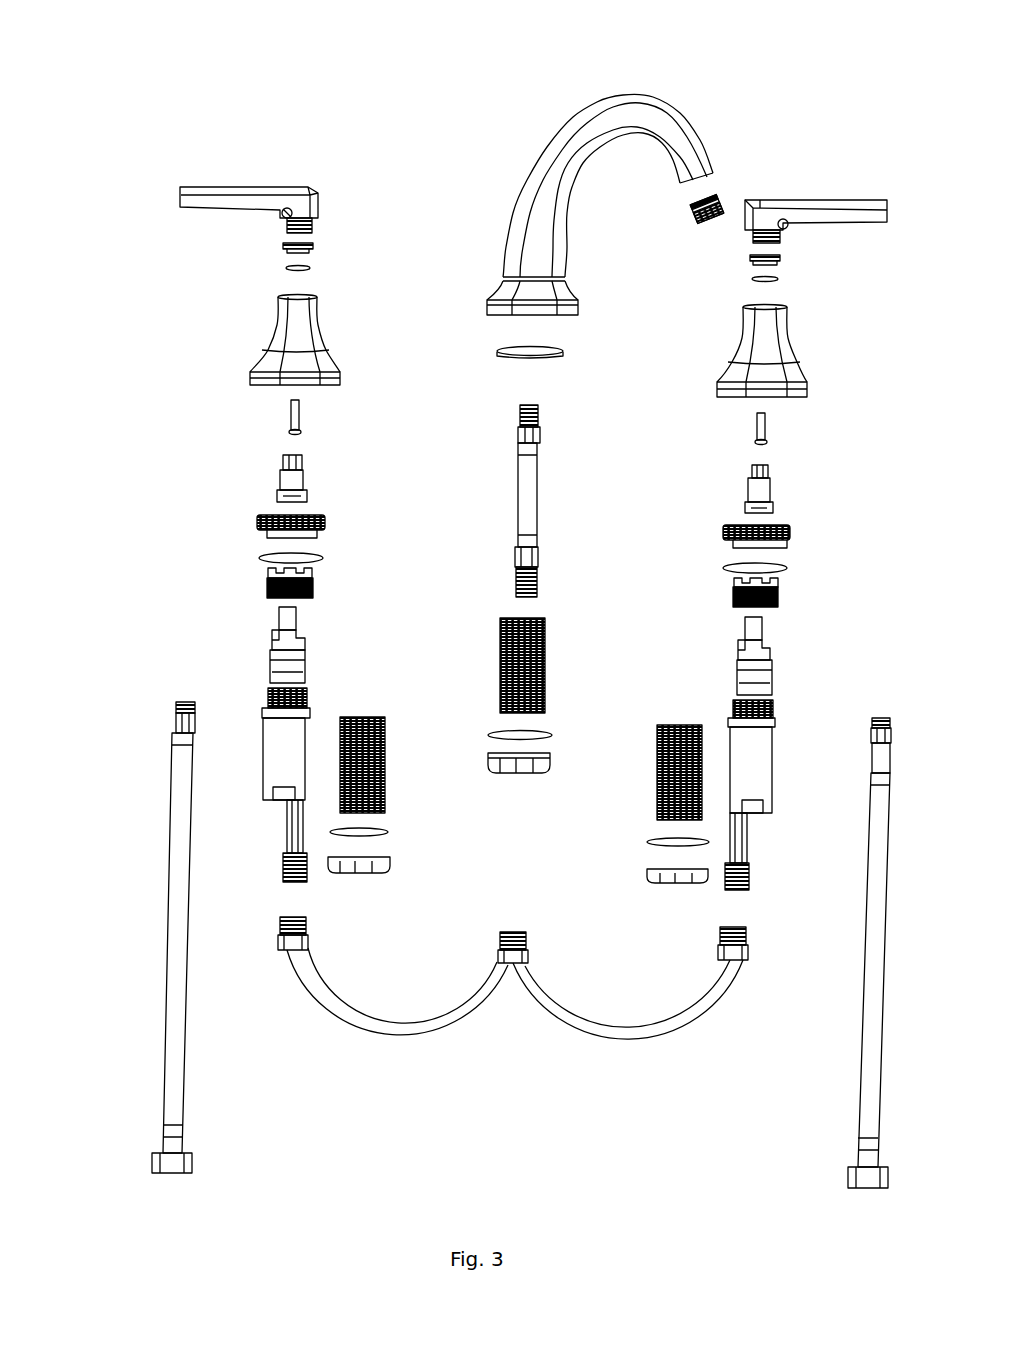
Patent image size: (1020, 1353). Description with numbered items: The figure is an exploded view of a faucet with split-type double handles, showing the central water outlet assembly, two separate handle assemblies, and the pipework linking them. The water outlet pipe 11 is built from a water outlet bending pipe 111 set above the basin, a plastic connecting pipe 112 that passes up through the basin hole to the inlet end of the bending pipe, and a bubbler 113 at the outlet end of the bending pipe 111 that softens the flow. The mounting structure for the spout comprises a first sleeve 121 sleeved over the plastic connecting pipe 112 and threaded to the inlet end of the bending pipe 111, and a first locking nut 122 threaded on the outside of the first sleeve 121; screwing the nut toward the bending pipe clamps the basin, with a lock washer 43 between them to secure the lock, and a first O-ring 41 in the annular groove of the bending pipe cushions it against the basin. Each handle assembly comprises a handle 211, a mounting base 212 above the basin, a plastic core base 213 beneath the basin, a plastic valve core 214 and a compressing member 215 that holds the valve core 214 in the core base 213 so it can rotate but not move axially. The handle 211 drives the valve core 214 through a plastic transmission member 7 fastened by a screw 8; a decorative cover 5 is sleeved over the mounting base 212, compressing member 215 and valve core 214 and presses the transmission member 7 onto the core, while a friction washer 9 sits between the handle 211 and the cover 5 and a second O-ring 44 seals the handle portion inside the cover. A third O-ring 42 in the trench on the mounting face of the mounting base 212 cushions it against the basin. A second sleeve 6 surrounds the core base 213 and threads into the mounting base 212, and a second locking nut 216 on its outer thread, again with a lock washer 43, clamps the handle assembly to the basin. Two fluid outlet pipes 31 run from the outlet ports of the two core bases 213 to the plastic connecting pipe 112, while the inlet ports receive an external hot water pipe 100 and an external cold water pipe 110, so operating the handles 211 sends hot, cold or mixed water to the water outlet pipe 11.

The water outlet pipe 11 is at (352, 117).
The water outlet bending pipe 111 is at (337, 24).
The plastic connecting pipe 112 is at (337, 77).
The bubbler 113 is at (337, 127).
The handle 211 is at (820, 196).
The friction washer 9 is at (781, 257).
The second O-ring 44 is at (781, 280).
The decorative cover 5 is at (793, 348).
The screw 8 is at (768, 428).
The plastic transmission member 7 is at (770, 482).
The mounting base 212 is at (790, 538).
The third O-ring 42 is at (790, 573).
The compressing member 215 is at (732, 578).
The plastic valve core 214 is at (742, 620).
The plastic core base 213 is at (748, 838).
The second sleeve 6 is at (655, 752).
The lock washer 43 is at (648, 843).
The second locking nut 216 is at (650, 876).
The first O-ring 41 is at (497, 347).
The first sleeve 121 is at (497, 647).
The first locking nut 122 is at (498, 777).
The fluid outlet pipe 31 is at (403, 1038).
The external hot water pipe 100 is at (168, 951).
The external cold water pipe 110 is at (865, 966).